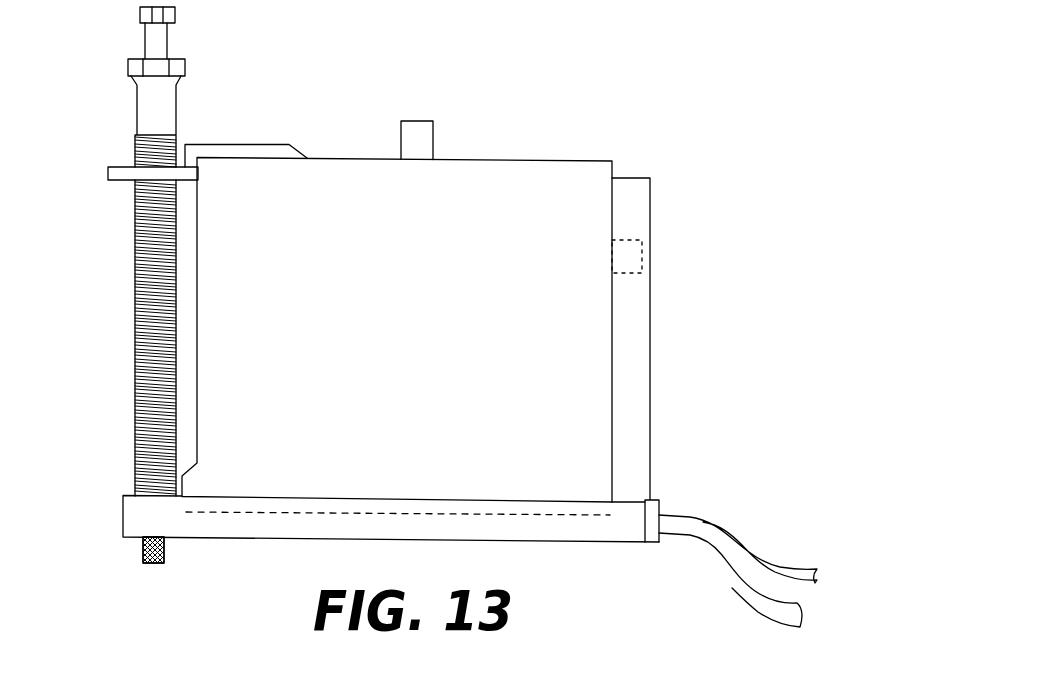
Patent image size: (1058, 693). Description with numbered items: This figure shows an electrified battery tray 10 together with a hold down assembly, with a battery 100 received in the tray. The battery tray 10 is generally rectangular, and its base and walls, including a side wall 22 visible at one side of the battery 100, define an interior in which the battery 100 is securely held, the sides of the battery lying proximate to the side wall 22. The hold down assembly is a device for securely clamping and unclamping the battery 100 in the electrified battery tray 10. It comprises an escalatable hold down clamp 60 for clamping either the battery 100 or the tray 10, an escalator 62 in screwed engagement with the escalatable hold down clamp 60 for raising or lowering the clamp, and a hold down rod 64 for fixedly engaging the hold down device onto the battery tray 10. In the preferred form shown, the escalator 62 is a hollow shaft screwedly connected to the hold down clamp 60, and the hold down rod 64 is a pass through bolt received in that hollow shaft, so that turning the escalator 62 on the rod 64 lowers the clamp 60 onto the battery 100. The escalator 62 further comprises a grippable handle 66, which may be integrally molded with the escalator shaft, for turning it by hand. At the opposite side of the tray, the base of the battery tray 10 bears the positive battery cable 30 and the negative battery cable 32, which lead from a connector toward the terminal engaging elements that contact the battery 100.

The electrified battery tray 10 is at (104, 514).
The battery 100 is at (511, 134).
The escalatable hold down clamp 60 is at (210, 151).
The side wall 22 is at (633, 327).
The escalator 62 is at (134, 265).
The grippable handle 66 is at (127, 68).
The hold down rod 64 is at (166, 35).
The negative battery cable 32 is at (757, 563).
The positive battery cable 30 is at (740, 590).